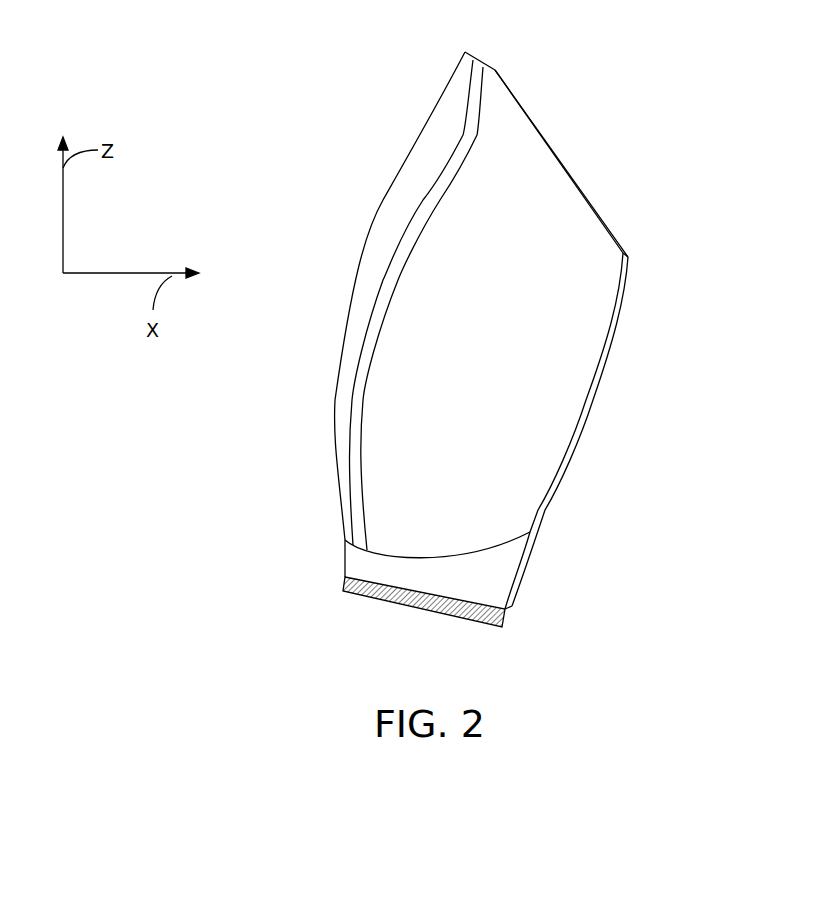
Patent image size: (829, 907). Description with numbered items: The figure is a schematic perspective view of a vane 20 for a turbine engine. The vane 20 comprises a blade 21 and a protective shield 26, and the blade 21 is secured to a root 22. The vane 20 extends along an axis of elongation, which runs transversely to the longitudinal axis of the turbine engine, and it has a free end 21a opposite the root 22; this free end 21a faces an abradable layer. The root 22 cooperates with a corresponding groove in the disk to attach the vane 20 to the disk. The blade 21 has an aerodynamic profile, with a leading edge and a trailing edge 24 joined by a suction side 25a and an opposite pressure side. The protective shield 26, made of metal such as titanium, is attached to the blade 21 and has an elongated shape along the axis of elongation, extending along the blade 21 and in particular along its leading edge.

The vane 20 is at (513, 356).
The blade 21 is at (533, 497).
The free end 21a is at (560, 121).
The root 22 is at (506, 618).
The trailing edge 24 is at (572, 455).
The suction side 25a is at (608, 347).
The protective shield 26 is at (365, 272).